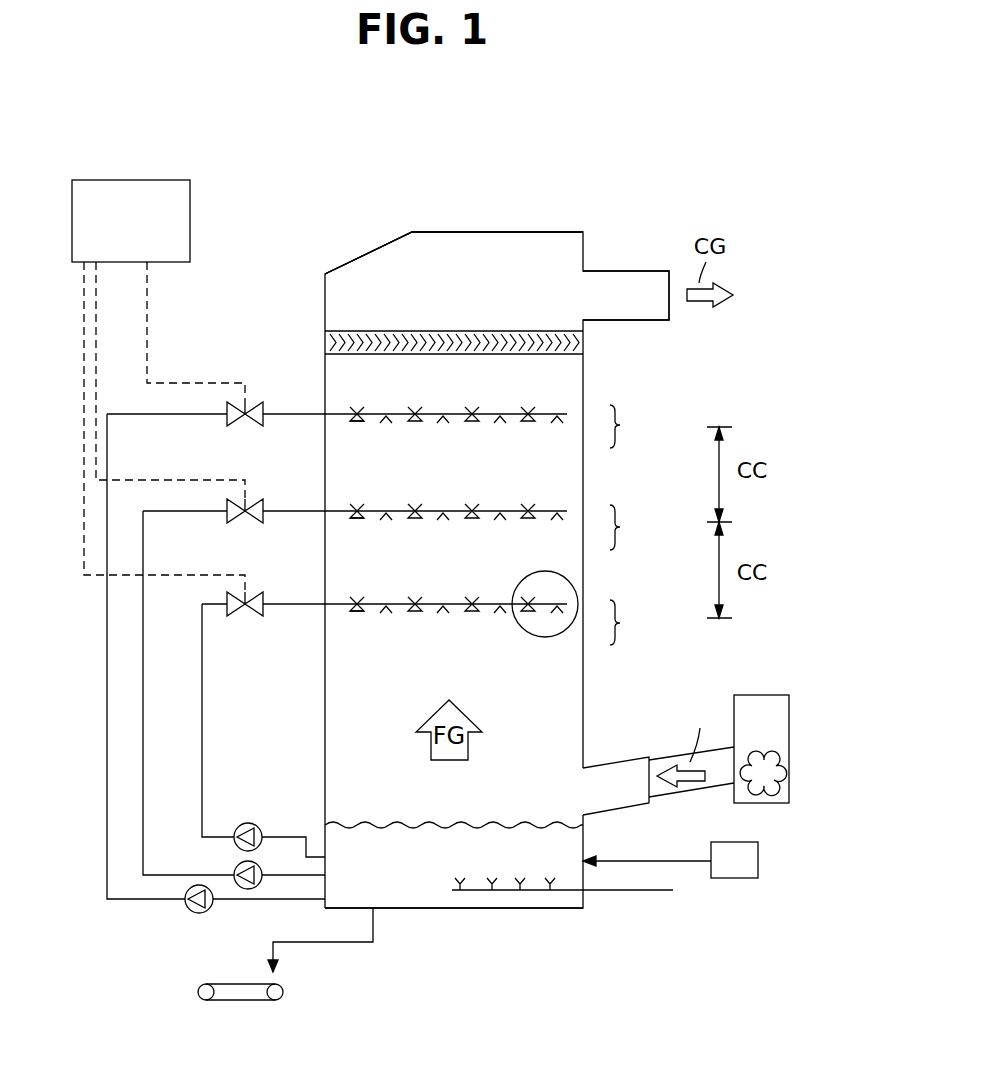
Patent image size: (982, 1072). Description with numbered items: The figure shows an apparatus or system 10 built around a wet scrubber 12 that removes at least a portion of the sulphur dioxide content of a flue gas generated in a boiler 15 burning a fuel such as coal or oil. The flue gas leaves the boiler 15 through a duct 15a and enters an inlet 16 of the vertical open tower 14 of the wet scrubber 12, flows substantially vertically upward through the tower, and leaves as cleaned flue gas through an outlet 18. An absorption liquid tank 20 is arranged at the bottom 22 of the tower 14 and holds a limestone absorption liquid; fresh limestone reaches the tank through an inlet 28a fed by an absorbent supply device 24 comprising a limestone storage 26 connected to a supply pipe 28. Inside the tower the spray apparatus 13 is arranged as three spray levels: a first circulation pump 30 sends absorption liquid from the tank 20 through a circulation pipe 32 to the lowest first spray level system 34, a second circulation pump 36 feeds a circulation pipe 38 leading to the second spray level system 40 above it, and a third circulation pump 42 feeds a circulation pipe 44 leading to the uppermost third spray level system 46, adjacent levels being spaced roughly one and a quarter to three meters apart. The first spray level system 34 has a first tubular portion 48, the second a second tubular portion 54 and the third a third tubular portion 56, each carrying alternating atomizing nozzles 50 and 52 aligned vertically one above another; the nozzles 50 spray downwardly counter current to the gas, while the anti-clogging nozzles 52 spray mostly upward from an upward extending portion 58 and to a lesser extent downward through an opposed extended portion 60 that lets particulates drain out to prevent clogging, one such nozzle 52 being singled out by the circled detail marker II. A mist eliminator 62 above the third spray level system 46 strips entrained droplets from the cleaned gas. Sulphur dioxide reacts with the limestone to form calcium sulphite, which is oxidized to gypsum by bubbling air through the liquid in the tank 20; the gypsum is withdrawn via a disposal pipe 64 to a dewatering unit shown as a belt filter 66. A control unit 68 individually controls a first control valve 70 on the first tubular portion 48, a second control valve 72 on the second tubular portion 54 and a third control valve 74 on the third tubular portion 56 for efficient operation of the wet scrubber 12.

The apparatus or system 10 is at (508, 162).
The wet scrubber 12 is at (584, 690).
The spray apparatus 13 is at (635, 525).
The vertical open tower 14 is at (360, 272).
The boiler 15 is at (790, 722).
The duct 15a is at (690, 790).
The inlet 16 is at (630, 760).
The outlet 18 is at (639, 270).
The absorption liquid tank 20 is at (586, 873).
The bottom 22 is at (655, 892).
The absorbent supply device 24 is at (778, 856).
The limestone storage 26 is at (758, 842).
The supply pipe 28 is at (672, 860).
The inlet 28a is at (588, 860).
The first circulation pump 30 is at (250, 822).
The absorption liquid circulation pipe 32 is at (205, 750).
The first spray level system 34 is at (337, 600).
The second circulation pump 36 is at (235, 865).
The absorption liquid circulation pipe 38 is at (146, 730).
The second spray level system 40 is at (460, 508).
The third circulation pump 42 is at (188, 908).
The absorption liquid circulation pipe 44 is at (105, 725).
The third spray level system 46 is at (415, 412).
The first tubular portion 48 is at (413, 612).
The atomizing nozzles 50 is at (500, 421).
The anti-clogging atomizing nozzles 52 is at (474, 405).
The second tubular portion 54 is at (566, 508).
The third tubular portion 56 is at (560, 412).
The upward extending portion 58 is at (357, 412).
The opposed extended portion 60 is at (357, 421).
The mist eliminator 62 is at (490, 331).
The disposal pipe 64 is at (330, 943).
The belt filter 66 is at (236, 1001).
The control unit 68 is at (190, 214).
The first control valve 70 is at (265, 605).
The second control valve 72 is at (265, 510).
The third control valve 74 is at (250, 403).
The detail view marker II is at (571, 590).